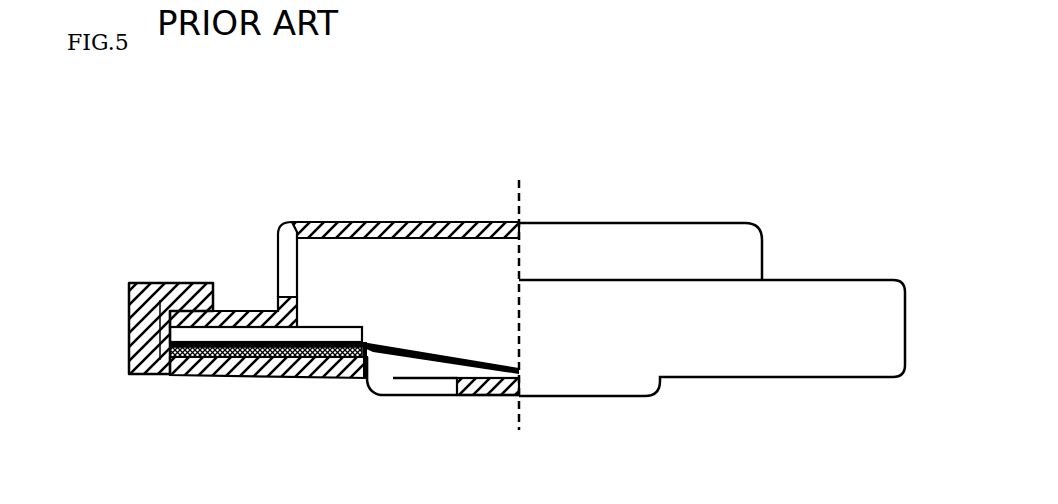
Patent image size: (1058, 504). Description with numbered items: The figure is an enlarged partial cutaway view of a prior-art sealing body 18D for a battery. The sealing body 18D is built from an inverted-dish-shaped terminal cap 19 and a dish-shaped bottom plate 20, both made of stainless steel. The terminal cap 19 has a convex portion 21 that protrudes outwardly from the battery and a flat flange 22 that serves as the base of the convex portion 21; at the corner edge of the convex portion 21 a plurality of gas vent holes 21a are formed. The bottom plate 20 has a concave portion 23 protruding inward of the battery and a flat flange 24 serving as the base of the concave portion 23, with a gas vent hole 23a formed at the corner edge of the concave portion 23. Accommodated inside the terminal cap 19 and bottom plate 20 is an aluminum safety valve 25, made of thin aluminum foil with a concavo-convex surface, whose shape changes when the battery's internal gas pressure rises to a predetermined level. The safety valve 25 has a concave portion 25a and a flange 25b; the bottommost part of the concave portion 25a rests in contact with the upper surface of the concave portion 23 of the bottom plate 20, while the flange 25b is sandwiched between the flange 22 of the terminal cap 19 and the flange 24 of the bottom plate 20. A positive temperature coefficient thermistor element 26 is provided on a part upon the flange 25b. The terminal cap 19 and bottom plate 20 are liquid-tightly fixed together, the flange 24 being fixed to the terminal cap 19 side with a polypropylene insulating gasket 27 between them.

The sealing body 18D is at (883, 138).
The terminal cap 19 is at (687, 237).
The bottom plate 20 is at (727, 360).
The convex portion 21 is at (383, 220).
The gas vent holes 21a is at (285, 220).
The flat flange 22 is at (247, 311).
The concave portion 23 is at (483, 393).
The gas vent hole 23a is at (427, 387).
The flat flange 24 is at (172, 370).
The safety valve 25 is at (406, 368).
The concave portion 25a is at (377, 393).
The flange 25b is at (264, 350).
The PTC thermistor element 26 is at (352, 335).
The insulating gasket 27 is at (148, 283).